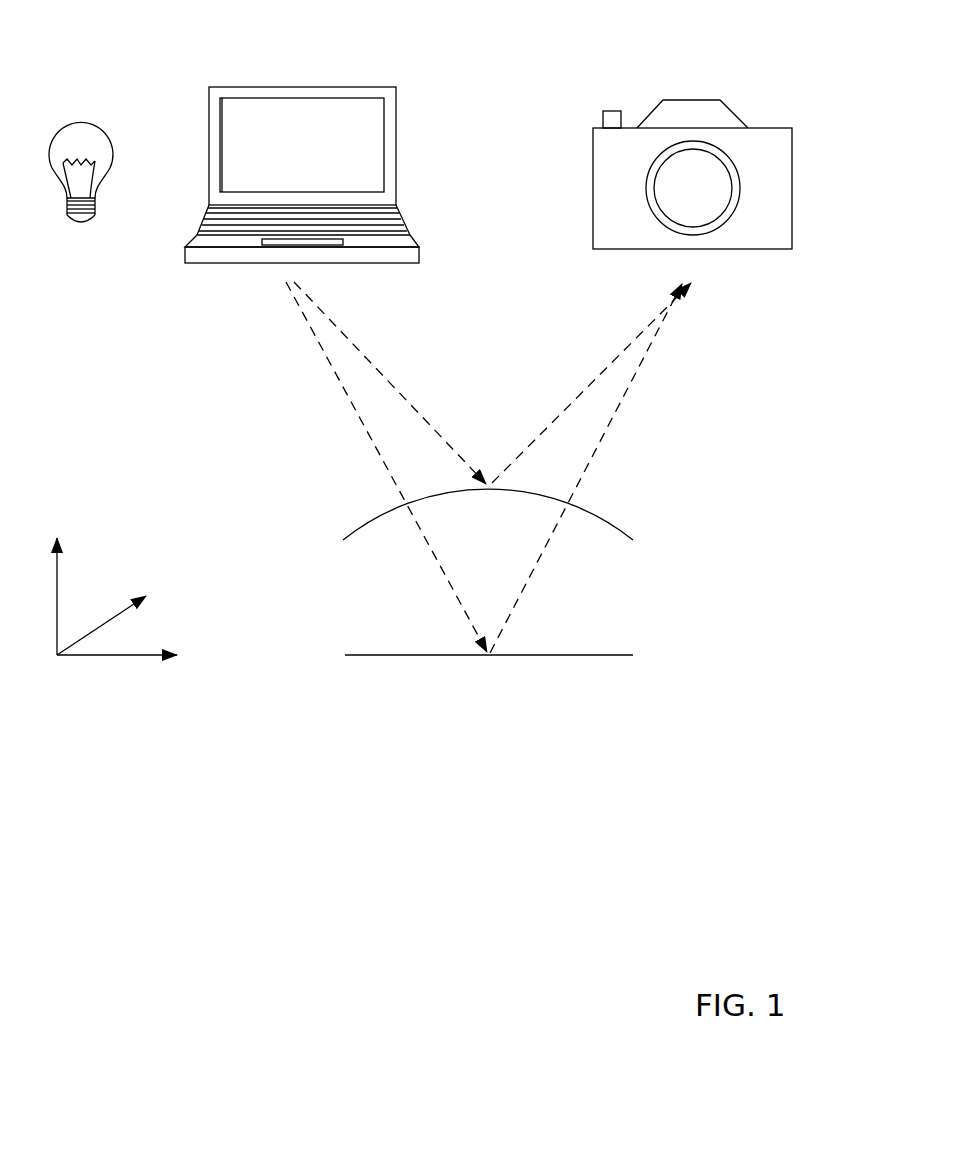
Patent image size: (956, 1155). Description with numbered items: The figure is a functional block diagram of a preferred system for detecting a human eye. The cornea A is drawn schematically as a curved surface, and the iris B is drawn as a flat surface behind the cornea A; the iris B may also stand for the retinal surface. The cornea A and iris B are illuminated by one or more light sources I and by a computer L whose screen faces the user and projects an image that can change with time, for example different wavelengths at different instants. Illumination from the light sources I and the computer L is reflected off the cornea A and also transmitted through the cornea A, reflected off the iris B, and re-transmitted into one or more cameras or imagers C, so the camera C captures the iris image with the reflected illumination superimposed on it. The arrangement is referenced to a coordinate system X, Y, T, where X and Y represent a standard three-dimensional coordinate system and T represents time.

The light source I is at (75, 173).
The computer L is at (310, 175).
The camera C is at (706, 174).
The cornea A is at (497, 527).
The iris B is at (499, 655).
The coordinate axis X is at (134, 656).
The coordinate axis Y is at (58, 570).
The time axis T is at (116, 612).